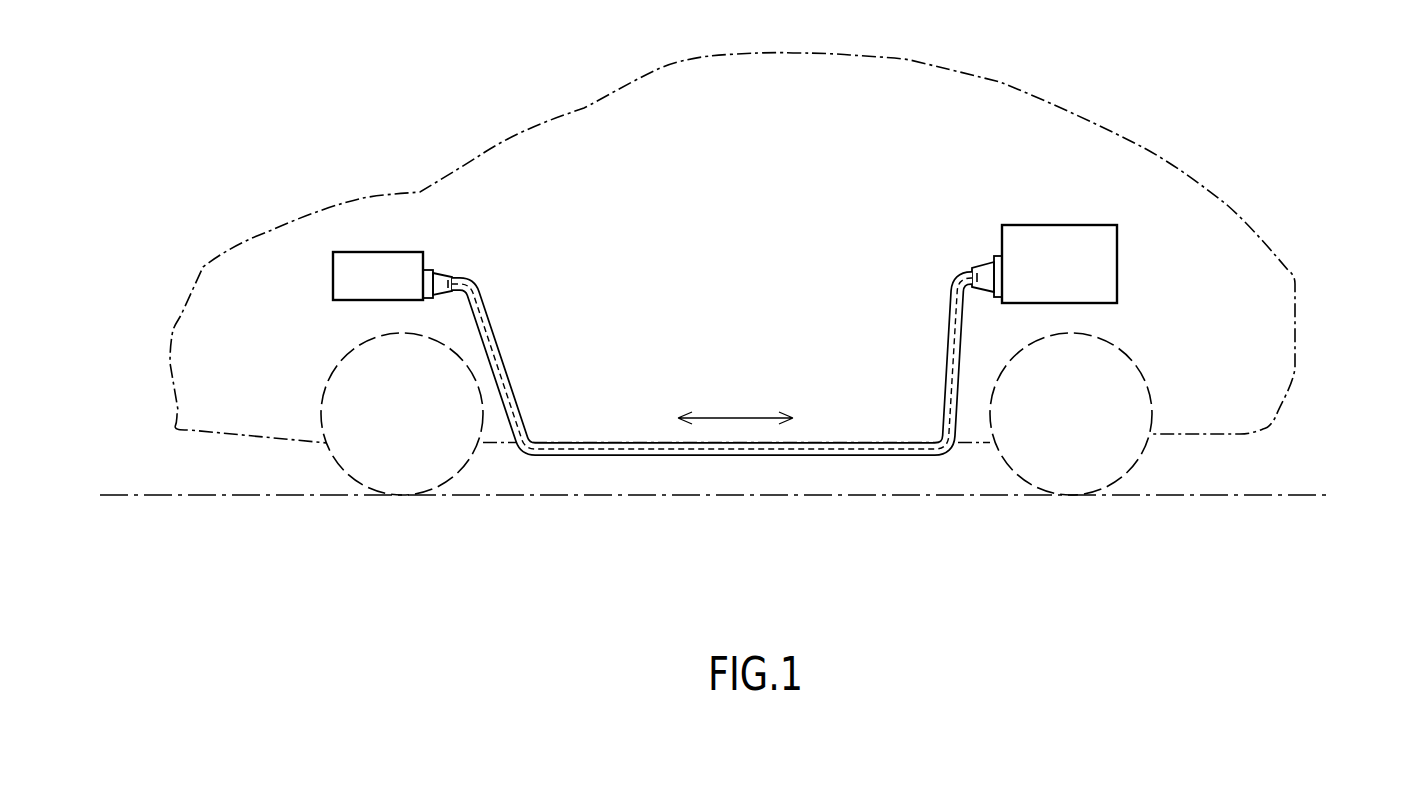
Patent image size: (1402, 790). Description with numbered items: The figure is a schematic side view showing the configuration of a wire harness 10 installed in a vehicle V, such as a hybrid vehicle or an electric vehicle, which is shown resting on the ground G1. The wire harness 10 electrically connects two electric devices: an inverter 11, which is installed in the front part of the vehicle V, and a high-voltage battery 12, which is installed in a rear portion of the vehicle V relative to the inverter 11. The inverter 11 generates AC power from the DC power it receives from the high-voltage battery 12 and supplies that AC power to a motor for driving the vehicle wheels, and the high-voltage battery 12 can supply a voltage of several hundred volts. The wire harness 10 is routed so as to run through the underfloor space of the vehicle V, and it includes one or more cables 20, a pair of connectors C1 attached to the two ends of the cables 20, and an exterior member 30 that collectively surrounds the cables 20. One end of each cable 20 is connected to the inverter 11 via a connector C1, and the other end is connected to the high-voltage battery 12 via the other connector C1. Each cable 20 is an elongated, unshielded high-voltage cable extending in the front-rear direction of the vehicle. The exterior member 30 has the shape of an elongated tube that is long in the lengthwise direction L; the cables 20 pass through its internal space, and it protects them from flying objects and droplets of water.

The wire harness 10 is at (730, 302).
The inverter 11 is at (394, 252).
The high-voltage battery 12 is at (1051, 225).
The cable 20 is at (502, 337).
The exterior member 30 is at (490, 305).
The connector C1 is at (443, 270).
The vehicle V is at (1031, 95).
The ground G1 is at (1292, 495).
The lengthwise direction L is at (735, 405).